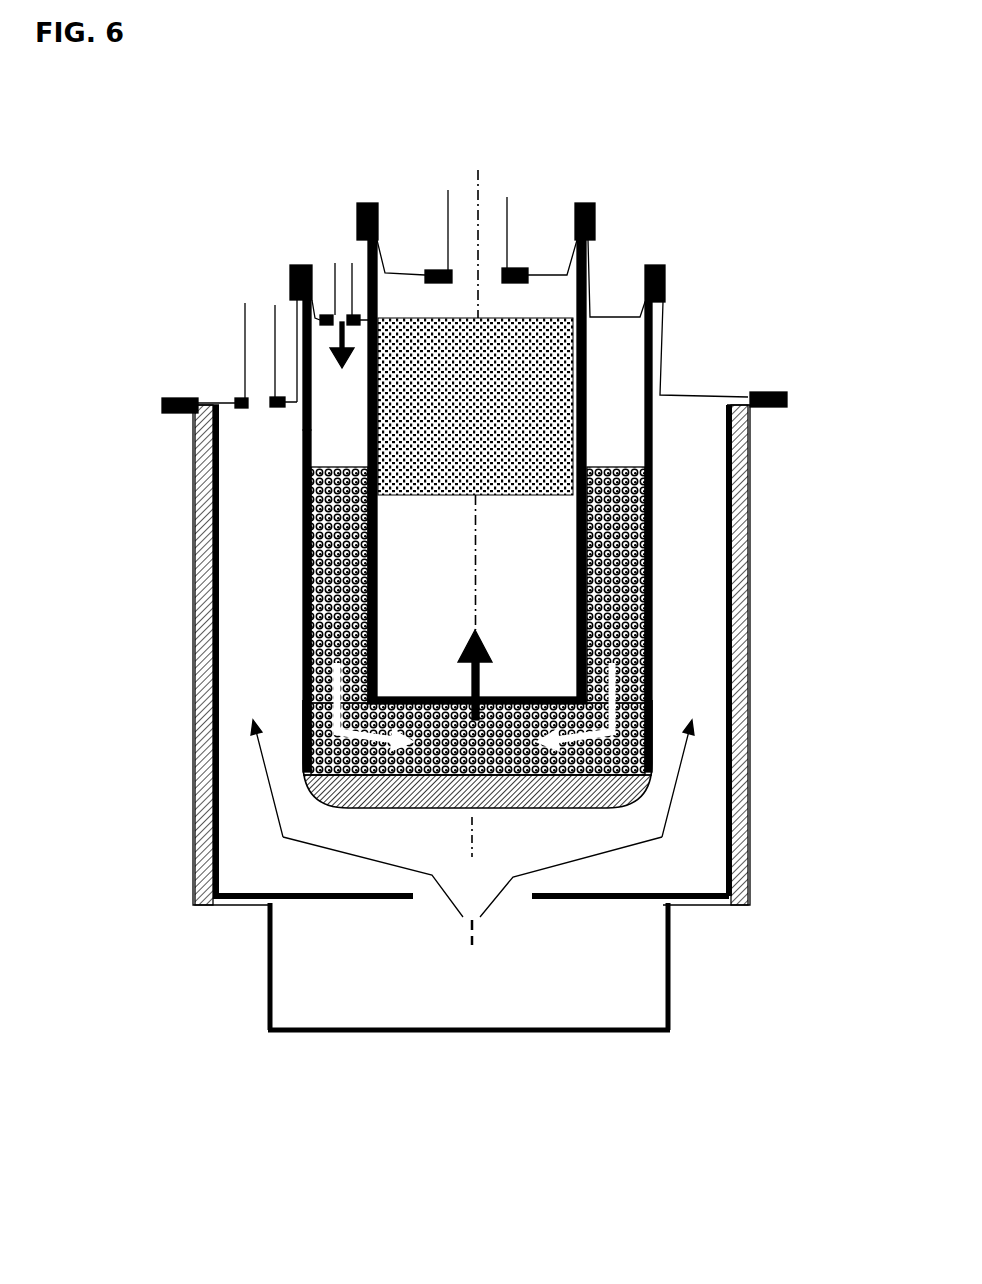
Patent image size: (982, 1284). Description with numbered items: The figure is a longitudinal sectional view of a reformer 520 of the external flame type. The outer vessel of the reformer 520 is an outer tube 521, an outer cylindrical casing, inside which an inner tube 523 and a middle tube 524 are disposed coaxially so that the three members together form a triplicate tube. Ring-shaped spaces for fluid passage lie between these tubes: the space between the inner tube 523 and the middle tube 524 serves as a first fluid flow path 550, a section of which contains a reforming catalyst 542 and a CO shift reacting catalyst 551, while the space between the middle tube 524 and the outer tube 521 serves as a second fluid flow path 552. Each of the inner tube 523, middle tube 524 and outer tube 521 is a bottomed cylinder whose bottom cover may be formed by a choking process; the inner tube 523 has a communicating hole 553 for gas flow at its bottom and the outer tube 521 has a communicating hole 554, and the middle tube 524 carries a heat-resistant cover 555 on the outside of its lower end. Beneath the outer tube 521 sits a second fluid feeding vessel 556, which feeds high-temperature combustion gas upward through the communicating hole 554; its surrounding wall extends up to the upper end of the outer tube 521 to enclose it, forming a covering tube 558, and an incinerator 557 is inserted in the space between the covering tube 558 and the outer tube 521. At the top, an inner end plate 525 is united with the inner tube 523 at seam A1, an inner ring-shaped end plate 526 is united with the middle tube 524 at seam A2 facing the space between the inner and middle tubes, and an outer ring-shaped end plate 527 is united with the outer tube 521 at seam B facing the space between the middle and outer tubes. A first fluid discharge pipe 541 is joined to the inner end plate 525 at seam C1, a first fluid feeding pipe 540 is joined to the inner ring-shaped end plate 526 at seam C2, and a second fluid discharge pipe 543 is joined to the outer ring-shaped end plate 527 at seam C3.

The reformer 520 is at (773, 343).
The outer tube 521 is at (730, 614).
The inner tube 523 is at (587, 410).
The middle tube 524 is at (640, 442).
The inner end plate 525 is at (540, 270).
The inner ring-shaped end plate 526 is at (603, 310).
The outer ring-shaped end plate 527 is at (683, 393).
The first fluid feeding pipe 540 is at (338, 265).
The first fluid discharge pipe 541 is at (495, 210).
The reforming catalyst 542 is at (307, 573).
The second fluid discharge pipe 543 is at (257, 317).
The first fluid flow path 550 is at (618, 333).
The CO shift reacting catalyst 551 is at (307, 432).
The second fluid flow path 552 is at (690, 597).
The communicating hole 553 is at (502, 700).
The communicating hole 554 is at (510, 900).
The heat-resistant cover 555 is at (353, 800).
The second fluid feeding vessel 556 is at (300, 1033).
The incinerator 557 is at (750, 823).
The covering tube 558 is at (750, 695).
The seam A1 is at (595, 218).
The seam A2 is at (665, 282).
The seam B is at (787, 400).
The seam C1 is at (433, 270).
The seam C2 is at (335, 263).
The seam C3 is at (238, 398).